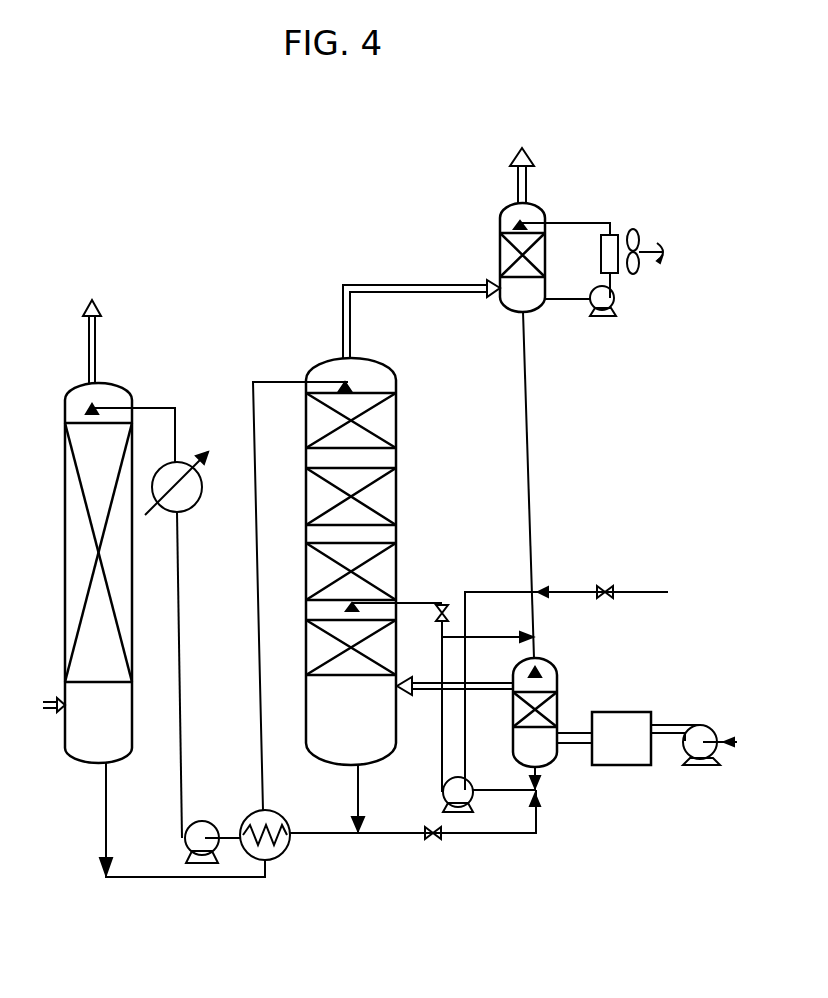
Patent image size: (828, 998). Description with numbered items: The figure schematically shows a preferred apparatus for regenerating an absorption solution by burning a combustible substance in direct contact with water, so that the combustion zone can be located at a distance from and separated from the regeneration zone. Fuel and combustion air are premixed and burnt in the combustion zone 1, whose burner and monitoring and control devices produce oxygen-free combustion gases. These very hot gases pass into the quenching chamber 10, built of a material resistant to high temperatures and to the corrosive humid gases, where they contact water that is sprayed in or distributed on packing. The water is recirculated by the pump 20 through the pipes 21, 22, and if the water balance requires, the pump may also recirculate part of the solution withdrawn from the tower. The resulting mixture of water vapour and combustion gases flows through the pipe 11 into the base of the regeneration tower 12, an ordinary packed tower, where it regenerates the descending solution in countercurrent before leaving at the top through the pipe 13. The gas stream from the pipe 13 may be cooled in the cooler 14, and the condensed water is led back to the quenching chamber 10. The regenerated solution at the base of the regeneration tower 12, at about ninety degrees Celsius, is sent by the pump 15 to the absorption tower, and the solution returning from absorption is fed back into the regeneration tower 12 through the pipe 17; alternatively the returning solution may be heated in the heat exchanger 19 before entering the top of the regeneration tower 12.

The combustion zone 1 is at (647, 738).
The quenching chamber 10 is at (549, 724).
The pipe 11 is at (455, 676).
The regeneration tower 12 is at (374, 561).
The pipe 13 is at (421, 308).
The cooler 14 is at (581, 232).
The pump 15 is at (199, 842).
The pipe 17 is at (302, 584).
The heat exchanger 19 is at (415, 802).
The pump 20 is at (441, 794).
The pipe 21 is at (504, 778).
The pipe 22 is at (487, 628).